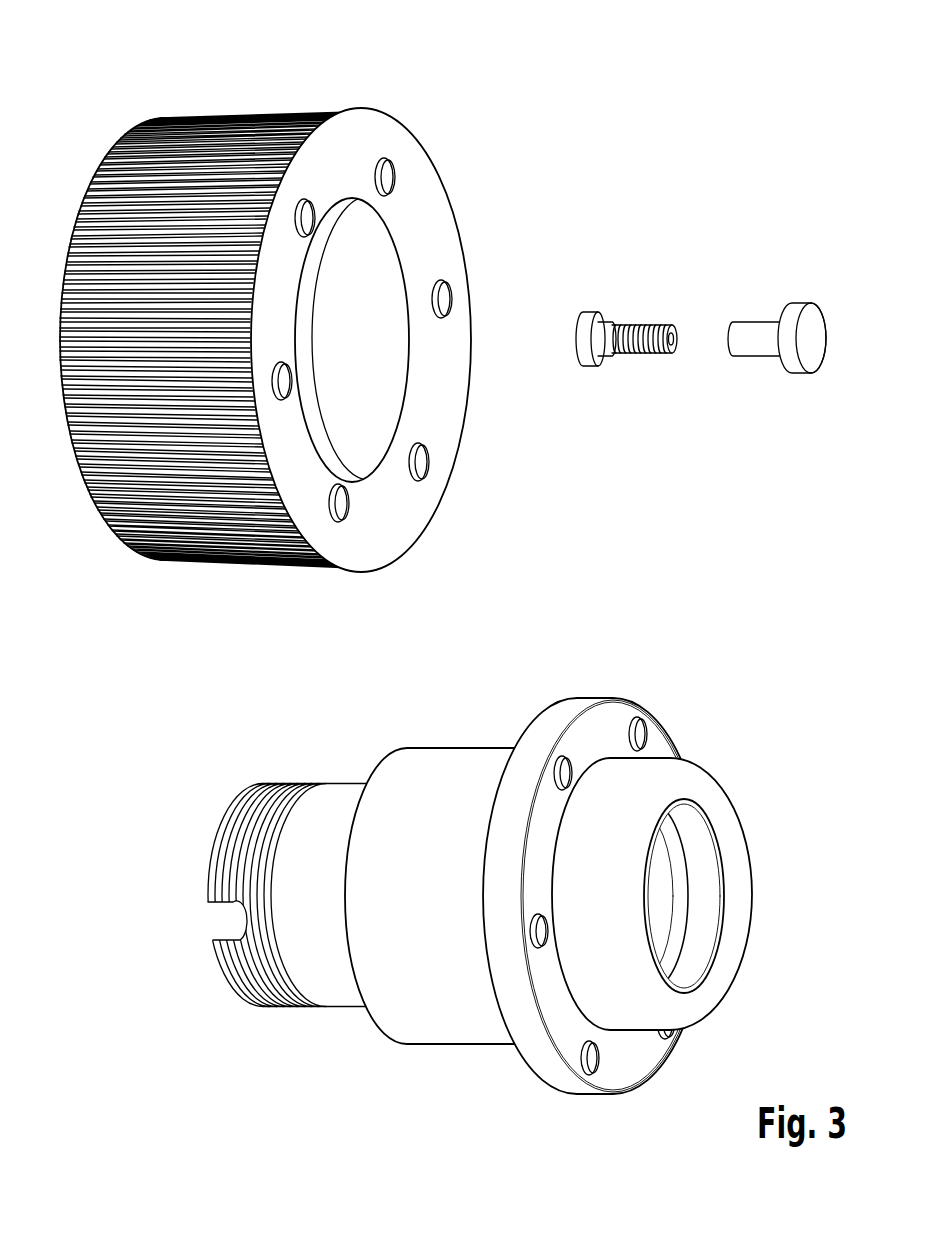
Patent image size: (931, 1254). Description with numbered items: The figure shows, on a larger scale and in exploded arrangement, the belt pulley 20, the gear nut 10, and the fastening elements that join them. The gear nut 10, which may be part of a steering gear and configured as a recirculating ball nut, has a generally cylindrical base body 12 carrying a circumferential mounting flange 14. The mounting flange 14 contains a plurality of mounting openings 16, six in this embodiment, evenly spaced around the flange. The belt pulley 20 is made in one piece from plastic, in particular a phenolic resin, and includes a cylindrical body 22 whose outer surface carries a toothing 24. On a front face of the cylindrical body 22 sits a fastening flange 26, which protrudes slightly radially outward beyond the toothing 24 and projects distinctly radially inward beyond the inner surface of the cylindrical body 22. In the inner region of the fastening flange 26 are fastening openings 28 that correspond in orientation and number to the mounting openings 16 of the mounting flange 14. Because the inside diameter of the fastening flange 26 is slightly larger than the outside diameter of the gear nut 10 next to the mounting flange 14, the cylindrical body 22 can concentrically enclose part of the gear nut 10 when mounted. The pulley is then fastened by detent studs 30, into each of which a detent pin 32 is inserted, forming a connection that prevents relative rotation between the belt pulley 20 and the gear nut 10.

The gear nut 10 is at (478, 838).
The base body 12 is at (452, 763).
The mounting flange 14 is at (555, 713).
The mounting openings 16 is at (637, 733).
The belt pulley 20 is at (288, 295).
The cylindrical body 22 is at (375, 375).
The toothing 24 is at (95, 218).
The fastening flange 26 is at (422, 177).
The fastening openings 28 is at (443, 303).
The detent stud 30 is at (752, 330).
The detent pin 32 is at (638, 330).